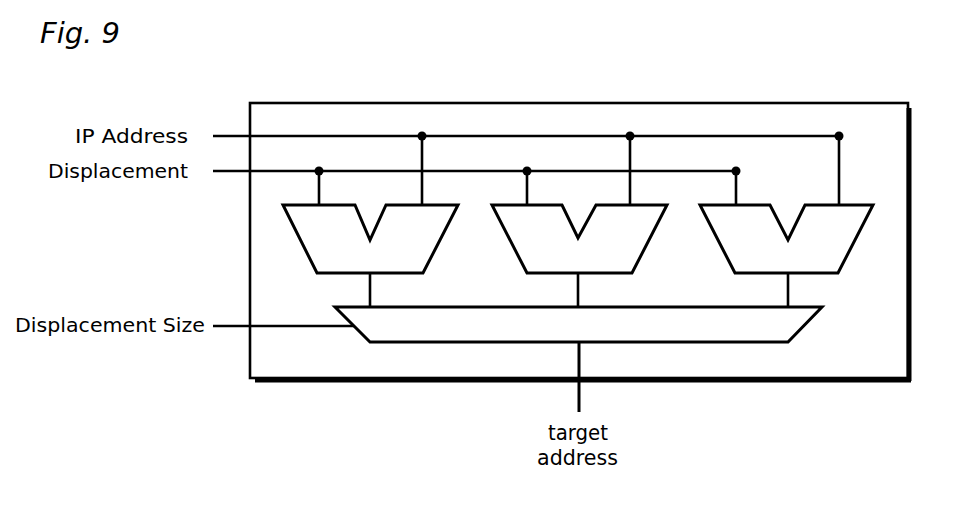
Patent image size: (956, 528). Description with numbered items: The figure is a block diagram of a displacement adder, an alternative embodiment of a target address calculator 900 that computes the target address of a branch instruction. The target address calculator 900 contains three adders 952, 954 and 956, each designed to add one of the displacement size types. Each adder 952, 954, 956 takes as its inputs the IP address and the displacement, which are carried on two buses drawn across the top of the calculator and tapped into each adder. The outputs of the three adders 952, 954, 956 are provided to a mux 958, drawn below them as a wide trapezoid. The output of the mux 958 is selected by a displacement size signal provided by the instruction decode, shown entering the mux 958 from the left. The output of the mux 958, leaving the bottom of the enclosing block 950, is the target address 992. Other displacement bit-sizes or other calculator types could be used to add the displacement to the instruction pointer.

The target address calculator 900 is at (793, 62).
The address computation block 950 is at (827, 380).
The adder 952 is at (440, 240).
The adder 954 is at (650, 242).
The adder 956 is at (855, 240).
The mux 958 is at (805, 327).
The target address 992 is at (579, 393).